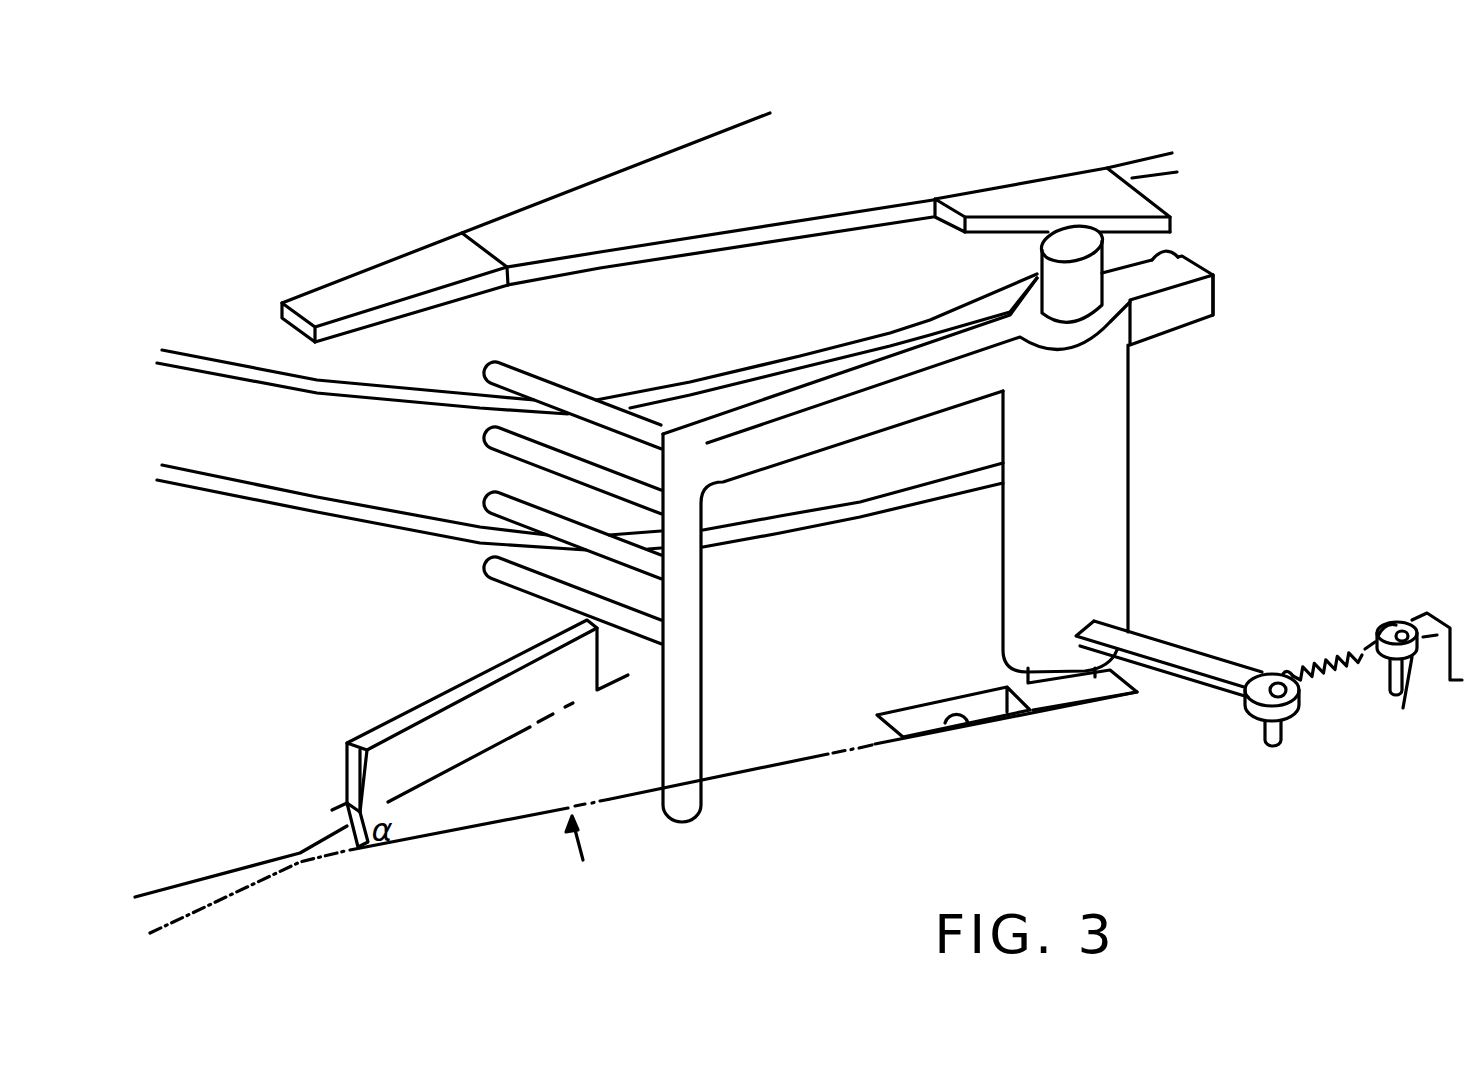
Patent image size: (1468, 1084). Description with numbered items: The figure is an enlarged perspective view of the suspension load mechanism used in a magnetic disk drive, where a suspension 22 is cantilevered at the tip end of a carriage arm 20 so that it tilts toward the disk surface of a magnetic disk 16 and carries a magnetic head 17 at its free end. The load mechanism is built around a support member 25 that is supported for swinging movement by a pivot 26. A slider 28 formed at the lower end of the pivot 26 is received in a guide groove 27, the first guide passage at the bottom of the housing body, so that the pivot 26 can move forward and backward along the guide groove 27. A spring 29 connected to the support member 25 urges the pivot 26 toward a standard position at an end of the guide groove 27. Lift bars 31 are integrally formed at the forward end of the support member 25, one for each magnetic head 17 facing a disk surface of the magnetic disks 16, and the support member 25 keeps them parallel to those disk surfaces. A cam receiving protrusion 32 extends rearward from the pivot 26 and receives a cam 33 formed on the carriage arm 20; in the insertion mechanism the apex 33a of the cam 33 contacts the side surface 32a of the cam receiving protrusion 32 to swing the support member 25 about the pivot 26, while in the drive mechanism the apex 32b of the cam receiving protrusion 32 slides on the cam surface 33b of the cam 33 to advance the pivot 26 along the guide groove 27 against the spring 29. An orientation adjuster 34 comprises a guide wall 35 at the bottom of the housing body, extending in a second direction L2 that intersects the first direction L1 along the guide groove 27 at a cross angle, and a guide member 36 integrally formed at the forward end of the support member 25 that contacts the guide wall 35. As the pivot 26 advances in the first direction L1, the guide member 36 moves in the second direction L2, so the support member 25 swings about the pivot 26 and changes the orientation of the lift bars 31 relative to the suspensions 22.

The magnetic disk 16 is at (233, 380).
The magnetic head 17 is at (287, 327).
The carriage arm 20 is at (587, 190).
The suspension 22 is at (388, 267).
The support member 25 is at (1003, 570).
The pivot 26 is at (1030, 677).
The guide groove 27 is at (967, 725).
The slider 28 is at (1100, 693).
The spring 29 is at (1323, 657).
The lift bar 31 is at (542, 385).
The cam receiving protrusion 32 is at (1150, 328).
The side surface 32a is at (1213, 303).
The apex 32b is at (1185, 258).
The cam 33 is at (1030, 198).
The apex 33a is at (1173, 217).
The cam surface 33b is at (1017, 227).
The orientation adjuster 34 is at (589, 862).
The guide wall 35 is at (463, 745).
The guide member 36 is at (661, 734).
The first direction L1 is at (461, 833).
The second direction L2 is at (300, 852).